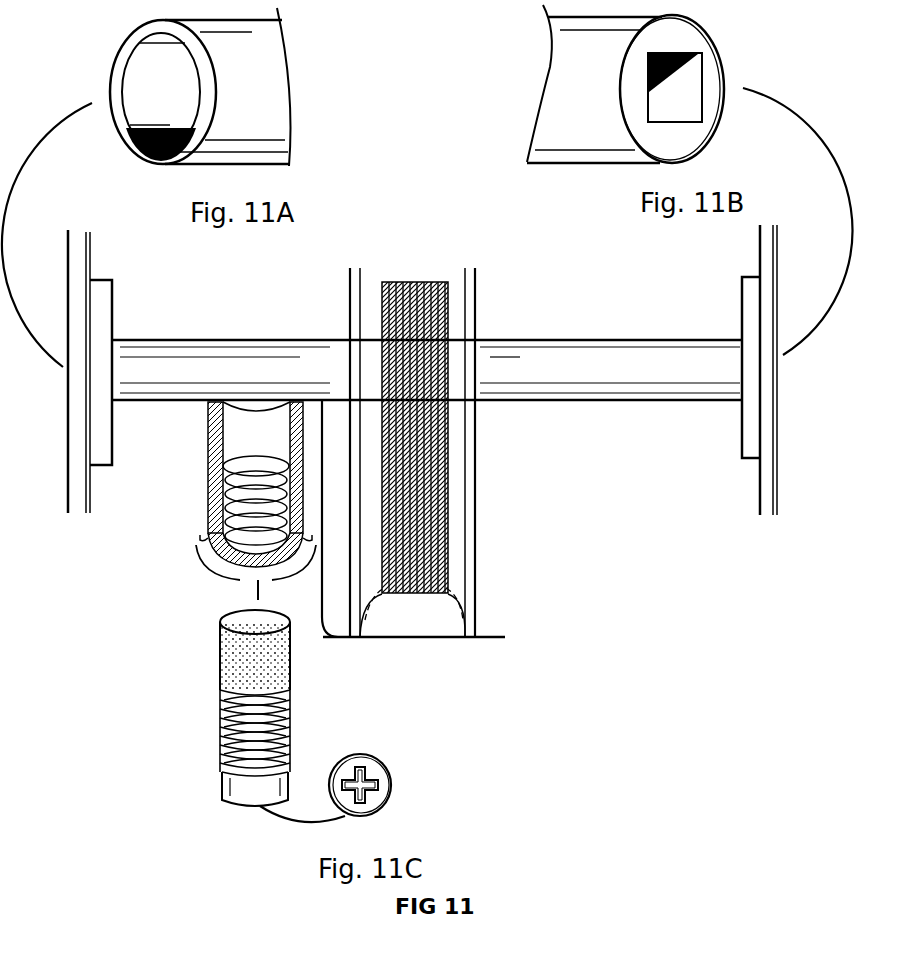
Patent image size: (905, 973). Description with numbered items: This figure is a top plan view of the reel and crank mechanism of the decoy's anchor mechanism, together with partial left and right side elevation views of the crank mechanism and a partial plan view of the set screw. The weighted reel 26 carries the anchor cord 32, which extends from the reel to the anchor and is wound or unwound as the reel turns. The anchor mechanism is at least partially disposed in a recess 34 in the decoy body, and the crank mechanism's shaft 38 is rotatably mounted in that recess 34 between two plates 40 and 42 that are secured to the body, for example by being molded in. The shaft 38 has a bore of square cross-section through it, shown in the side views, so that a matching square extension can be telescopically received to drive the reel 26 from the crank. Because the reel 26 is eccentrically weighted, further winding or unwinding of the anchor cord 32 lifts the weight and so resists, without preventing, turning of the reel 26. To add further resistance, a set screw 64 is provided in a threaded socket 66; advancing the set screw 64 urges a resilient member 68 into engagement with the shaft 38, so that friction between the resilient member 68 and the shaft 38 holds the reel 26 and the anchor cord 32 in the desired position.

The weighted reel 26 is at (470, 590).
The anchor cord 32 is at (445, 295).
The recess 34 is at (335, 640).
The shaft 38 is at (573, 380).
The plate 40 is at (112, 313).
The plate 42 is at (742, 440).
The set screw 64 is at (220, 735).
The threaded socket 66 is at (218, 497).
The resilient member 68 is at (276, 662).